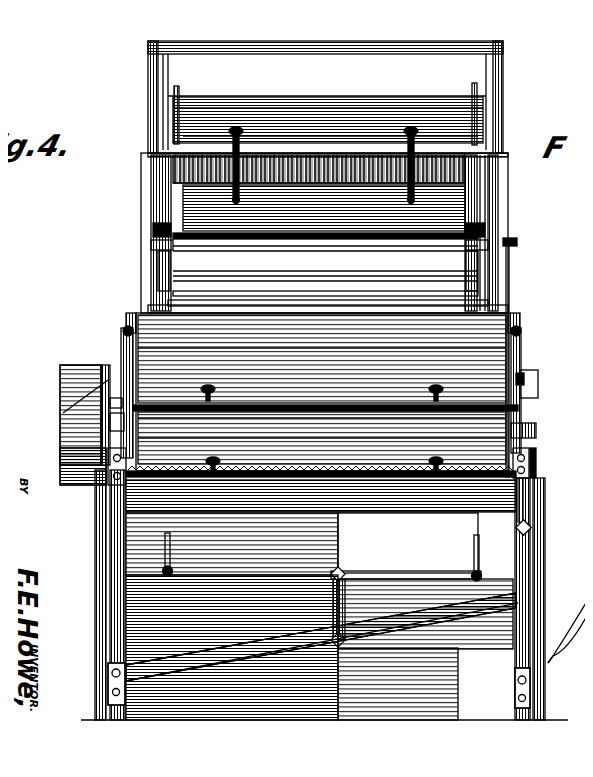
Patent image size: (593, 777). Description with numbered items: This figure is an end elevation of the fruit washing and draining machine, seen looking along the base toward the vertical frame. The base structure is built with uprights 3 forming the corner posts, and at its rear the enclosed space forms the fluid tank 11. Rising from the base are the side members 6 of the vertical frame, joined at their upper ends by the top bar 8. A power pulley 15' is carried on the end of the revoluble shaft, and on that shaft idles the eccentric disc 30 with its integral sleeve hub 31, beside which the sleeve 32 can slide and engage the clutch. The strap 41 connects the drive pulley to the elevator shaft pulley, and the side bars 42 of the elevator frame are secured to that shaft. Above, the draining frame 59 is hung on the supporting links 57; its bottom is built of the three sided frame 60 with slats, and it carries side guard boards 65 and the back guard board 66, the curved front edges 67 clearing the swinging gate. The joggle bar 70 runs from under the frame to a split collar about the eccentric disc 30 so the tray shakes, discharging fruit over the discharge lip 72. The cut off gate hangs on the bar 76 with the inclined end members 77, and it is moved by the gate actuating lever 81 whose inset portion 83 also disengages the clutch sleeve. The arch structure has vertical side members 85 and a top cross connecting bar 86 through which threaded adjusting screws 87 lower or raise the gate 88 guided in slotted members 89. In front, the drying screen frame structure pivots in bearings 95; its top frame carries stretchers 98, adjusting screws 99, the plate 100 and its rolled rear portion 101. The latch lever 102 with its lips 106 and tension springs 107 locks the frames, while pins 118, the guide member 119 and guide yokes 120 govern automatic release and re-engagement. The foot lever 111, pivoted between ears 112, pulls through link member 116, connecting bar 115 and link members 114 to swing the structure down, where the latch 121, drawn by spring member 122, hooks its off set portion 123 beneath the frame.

The uprights 3 is at (102, 582).
The side members 6 is at (140, 68).
The top bar 8 is at (338, 36).
The fluid tank 11 is at (478, 678).
The power pulley 15' is at (65, 401).
The eccentric disc 30 is at (408, 510).
The sleeve hub 31 is at (388, 505).
The sleeve 32 is at (450, 520).
The strap 41 is at (230, 293).
The side bars 42 is at (122, 310).
The supporting links 57 is at (175, 295).
The draining frame 59 is at (381, 86).
The three sided frame 60 is at (330, 102).
The side guard boards 65 is at (290, 100).
The back guard board 66 is at (168, 85).
The curved front edges 67 is at (145, 220).
The joggle bar 70 is at (320, 295).
The discharge lip 72 is at (445, 305).
The bar 76 is at (145, 236).
The end members 77 is at (150, 248).
The gate actuating lever 81 is at (502, 278).
The inset portion 83 is at (375, 173).
The vertical side members 85 is at (135, 157).
The top cross connecting bar 86 is at (206, 122).
The threaded adjusting screws 87 is at (230, 120).
The gate 88 is at (488, 160).
The slotted members 89 is at (200, 172).
The bearings 95 is at (432, 240).
The stretchers 98 is at (322, 419).
The adjusting screws 99 is at (198, 379).
The plate 100 is at (325, 396).
The rolled rear portion 101 is at (345, 318).
The latch lever 102 is at (115, 322).
The lips 106 is at (100, 418).
The tension springs 107 is at (113, 340).
The foot lever 111 is at (448, 612).
The ears 112 is at (98, 640).
The link member 114 is at (157, 540).
The connecting bar 115 is at (424, 569).
The link member 116 is at (337, 606).
The pins 118 is at (92, 385).
The guide member 119 is at (85, 478).
The guide yokes 120 is at (70, 478).
The latch 121 is at (520, 492).
The spring member 122 is at (396, 420).
The off set portion 123 is at (528, 428).